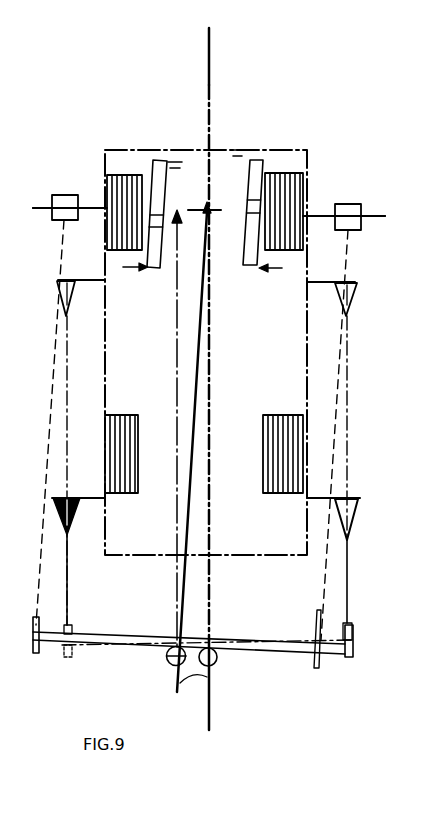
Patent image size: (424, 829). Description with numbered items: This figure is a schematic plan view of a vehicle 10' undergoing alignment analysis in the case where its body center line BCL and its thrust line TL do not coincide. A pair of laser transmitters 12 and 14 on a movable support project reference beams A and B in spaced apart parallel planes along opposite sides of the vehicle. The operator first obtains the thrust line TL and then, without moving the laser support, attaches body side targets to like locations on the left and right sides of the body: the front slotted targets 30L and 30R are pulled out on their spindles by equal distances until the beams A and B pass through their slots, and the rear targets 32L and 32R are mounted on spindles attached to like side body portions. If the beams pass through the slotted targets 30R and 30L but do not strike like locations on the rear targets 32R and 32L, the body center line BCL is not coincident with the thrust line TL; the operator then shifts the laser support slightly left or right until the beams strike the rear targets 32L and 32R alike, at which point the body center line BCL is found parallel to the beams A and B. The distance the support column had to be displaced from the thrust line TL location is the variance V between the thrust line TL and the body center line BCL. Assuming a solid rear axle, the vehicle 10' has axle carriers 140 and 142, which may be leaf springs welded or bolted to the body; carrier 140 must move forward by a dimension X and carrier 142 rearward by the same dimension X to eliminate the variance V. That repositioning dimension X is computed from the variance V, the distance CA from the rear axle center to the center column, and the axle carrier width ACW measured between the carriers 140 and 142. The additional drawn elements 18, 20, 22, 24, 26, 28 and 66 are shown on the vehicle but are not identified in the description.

The vehicle 10' is at (261, 352).
The laser transmitter 12 is at (33, 628).
The laser transmitter 14 is at (318, 640).
The drive motor 18 is at (127, 432).
The drive motor 20 is at (276, 424).
The steering motor 22 is at (128, 182).
The steering motor 24 is at (300, 188).
The shaft bearing block 26 is at (72, 195).
The shaft bearing block 28 is at (344, 204).
The right front slotted target 30R is at (56, 508).
The left front slotted target 30L is at (362, 506).
The right rear target 32R is at (60, 287).
The left rear target 32L is at (358, 290).
The steering shaft 66 is at (47, 208).
The axle carrier 140 is at (157, 160).
The axle carrier 142 is at (258, 160).
The repositioning dimension X is at (182, 168).
The axle carrier width ACW is at (177, 265).
The distance from axle center to center column CA is at (177, 393).
The laser reference beam A is at (68, 560).
The laser reference beam B is at (350, 552).
The thrust line TL is at (176, 683).
The variance V is at (193, 686).
The body center line BCL is at (211, 718).